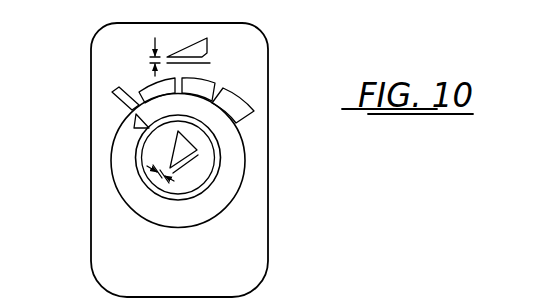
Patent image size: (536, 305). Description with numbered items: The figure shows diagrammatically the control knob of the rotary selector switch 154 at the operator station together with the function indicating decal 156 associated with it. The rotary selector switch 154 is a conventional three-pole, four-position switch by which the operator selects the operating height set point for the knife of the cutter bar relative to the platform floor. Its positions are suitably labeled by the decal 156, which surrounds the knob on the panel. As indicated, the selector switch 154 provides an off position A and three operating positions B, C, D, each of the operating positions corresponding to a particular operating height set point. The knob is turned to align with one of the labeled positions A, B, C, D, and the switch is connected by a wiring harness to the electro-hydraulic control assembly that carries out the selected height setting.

The rotary selector switch 154 is at (120, 215).
The decal 156 is at (268, 195).
The off position A is at (112, 94).
The operating position B is at (146, 88).
The operating position C is at (211, 81).
The operating position D is at (251, 112).